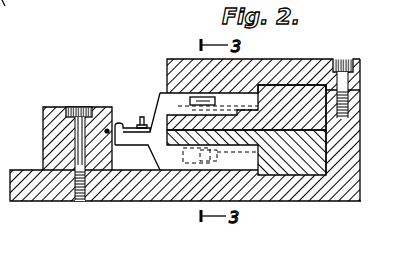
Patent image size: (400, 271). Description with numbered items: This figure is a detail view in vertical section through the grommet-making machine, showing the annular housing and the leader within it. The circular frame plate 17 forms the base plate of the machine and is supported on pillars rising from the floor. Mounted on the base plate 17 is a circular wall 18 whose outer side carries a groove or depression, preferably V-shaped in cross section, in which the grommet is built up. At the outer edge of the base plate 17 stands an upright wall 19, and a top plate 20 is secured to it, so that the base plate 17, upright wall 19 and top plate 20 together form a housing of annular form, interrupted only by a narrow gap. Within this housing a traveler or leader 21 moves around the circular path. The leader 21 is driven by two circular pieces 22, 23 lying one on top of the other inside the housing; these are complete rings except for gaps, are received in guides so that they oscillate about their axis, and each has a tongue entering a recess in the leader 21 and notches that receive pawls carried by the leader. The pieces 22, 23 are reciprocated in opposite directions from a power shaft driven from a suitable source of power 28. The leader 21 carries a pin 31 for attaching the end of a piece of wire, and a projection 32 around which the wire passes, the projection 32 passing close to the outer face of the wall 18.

The frame plate 17 is at (129, 193).
The wall 18 is at (60, 122).
The upright wall 19 is at (348, 132).
The top plate 20 is at (186, 70).
The traveler or leader 21 is at (160, 96).
The circular piece 22 is at (300, 92).
The circular piece 23 is at (291, 168).
The source of power 28 is at (14, 12).
The pin 31 is at (138, 115).
The projection 32 is at (113, 125).